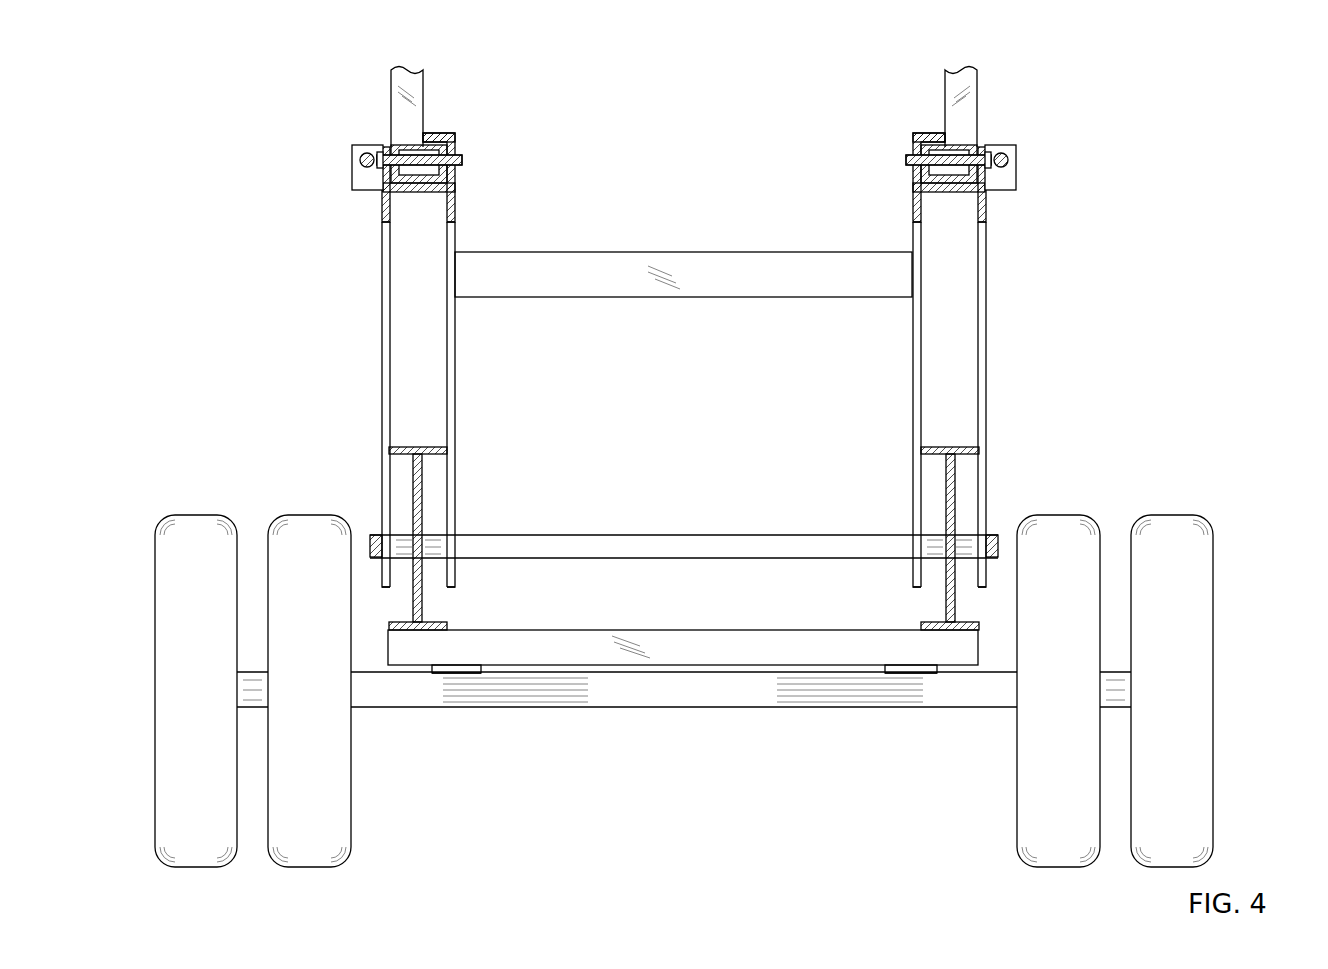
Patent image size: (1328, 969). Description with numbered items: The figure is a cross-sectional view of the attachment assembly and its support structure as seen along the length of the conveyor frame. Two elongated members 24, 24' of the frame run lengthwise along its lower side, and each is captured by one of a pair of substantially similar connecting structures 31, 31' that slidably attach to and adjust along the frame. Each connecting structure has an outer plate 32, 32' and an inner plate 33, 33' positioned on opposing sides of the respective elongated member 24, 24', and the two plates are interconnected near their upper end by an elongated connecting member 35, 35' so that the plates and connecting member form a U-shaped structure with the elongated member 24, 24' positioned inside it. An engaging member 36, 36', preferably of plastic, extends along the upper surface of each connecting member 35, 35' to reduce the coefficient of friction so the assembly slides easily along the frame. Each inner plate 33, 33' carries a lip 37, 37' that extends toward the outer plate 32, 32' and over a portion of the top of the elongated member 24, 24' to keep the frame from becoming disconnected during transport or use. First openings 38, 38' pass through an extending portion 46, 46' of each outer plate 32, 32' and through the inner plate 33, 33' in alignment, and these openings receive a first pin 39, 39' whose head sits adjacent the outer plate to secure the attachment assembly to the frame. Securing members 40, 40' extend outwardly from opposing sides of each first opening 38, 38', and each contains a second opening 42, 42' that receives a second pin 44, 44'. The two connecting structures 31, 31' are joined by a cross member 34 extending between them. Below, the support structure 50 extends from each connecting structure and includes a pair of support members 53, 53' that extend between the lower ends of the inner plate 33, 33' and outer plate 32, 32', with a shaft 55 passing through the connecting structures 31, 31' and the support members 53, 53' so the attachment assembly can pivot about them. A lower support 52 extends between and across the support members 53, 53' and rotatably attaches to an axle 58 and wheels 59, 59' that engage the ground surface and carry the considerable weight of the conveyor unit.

The elongated member 24 is at (883, 128).
The elongated member 24' is at (486, 128).
The connecting structure 31 is at (1087, 422).
The connecting structure 31' is at (272, 468).
The outer plate 32 is at (1014, 404).
The outer plate 32' is at (336, 404).
The inner plate 33 is at (889, 404).
The inner plate 33' is at (492, 404).
The cross member 34 is at (705, 262).
The connecting member 35 is at (1017, 237).
The connecting member 35' is at (344, 237).
The engaging member 36 is at (898, 190).
The engaging member 36' is at (470, 190).
The lip 37 is at (912, 107).
The lip 37' is at (457, 107).
The first opening 38 is at (941, 123).
The first opening 38' is at (427, 123).
The first pin 39 is at (1050, 198).
The clamp side wall 39' is at (313, 198).
The securing member 40 is at (1064, 162).
The securing member 40' is at (298, 162).
The second opening 42 is at (1065, 178).
The second opening 42' is at (296, 178).
The second pin 44 is at (1050, 126).
The second pin 44' is at (310, 126).
The extending portion 46 is at (1019, 255).
The extending portion 46' is at (344, 255).
The support structure 50 is at (805, 714).
The lower support 52 is at (745, 628).
The support member 53 is at (903, 538).
The support member 53' is at (473, 538).
The shaft 55 is at (680, 535).
The axle 58 is at (658, 706).
The wheel 59 is at (1047, 705).
The wheels 59' is at (324, 694).